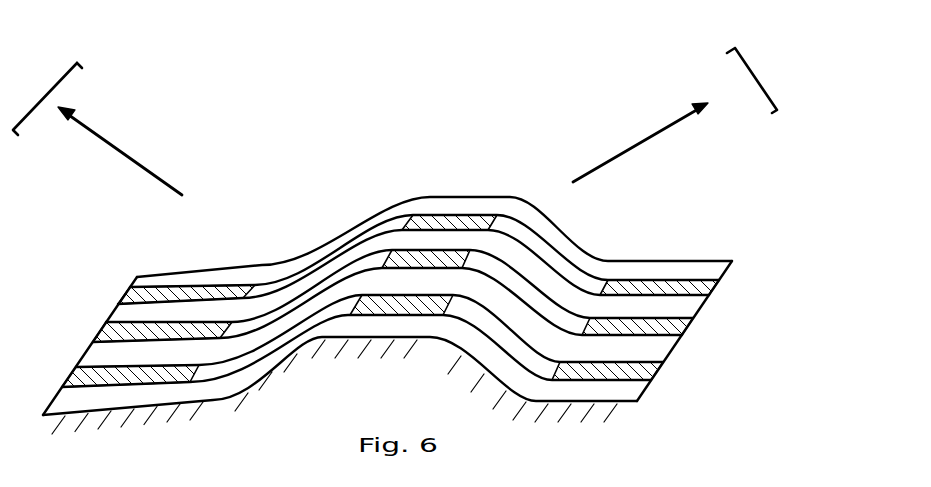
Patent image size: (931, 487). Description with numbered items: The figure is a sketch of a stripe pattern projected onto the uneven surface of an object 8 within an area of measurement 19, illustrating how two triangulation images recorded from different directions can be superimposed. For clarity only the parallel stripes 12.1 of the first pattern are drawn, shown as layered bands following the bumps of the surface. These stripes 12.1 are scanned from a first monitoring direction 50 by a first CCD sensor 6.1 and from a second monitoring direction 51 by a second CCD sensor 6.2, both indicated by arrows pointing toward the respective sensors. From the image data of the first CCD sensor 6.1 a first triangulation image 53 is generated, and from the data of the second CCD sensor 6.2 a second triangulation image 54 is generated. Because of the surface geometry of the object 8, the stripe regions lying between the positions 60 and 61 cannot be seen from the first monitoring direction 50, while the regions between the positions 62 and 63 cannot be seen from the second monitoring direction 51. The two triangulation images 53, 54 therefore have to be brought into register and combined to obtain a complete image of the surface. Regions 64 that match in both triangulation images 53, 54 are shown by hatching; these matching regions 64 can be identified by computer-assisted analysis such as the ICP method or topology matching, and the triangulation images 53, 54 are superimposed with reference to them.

The first CCD sensor 6.1 is at (752, 78).
The second CCD sensor 6.2 is at (55, 85).
The object 8 is at (482, 374).
The parallel stripes 12.1 is at (660, 372).
The area of measurement 19 is at (627, 261).
The first monitoring direction 50 is at (633, 147).
The second monitoring direction 51 is at (125, 153).
The first triangulation image 53 is at (733, 78).
The second triangulation image 54 is at (80, 83).
The position 60 is at (397, 300).
The position 61 is at (232, 338).
The position 62 is at (485, 243).
The position 63 is at (558, 377).
The matching regions 64 is at (162, 293).